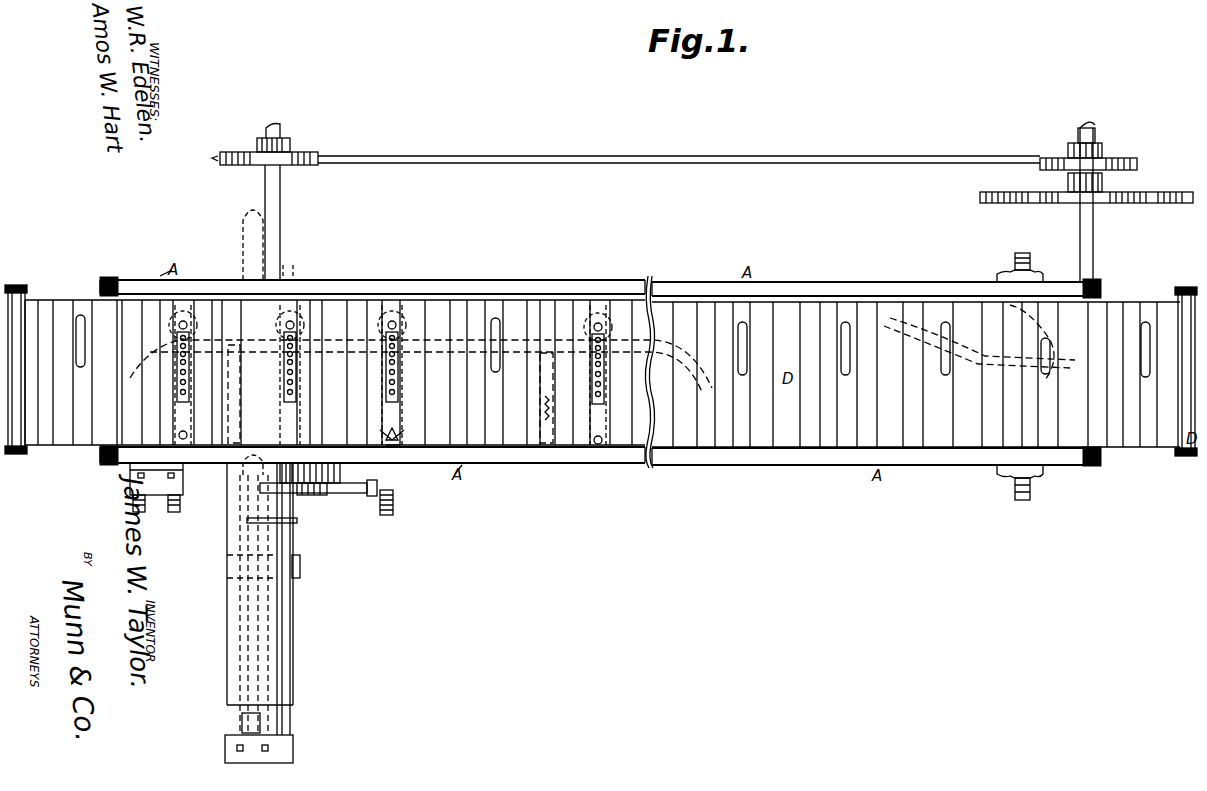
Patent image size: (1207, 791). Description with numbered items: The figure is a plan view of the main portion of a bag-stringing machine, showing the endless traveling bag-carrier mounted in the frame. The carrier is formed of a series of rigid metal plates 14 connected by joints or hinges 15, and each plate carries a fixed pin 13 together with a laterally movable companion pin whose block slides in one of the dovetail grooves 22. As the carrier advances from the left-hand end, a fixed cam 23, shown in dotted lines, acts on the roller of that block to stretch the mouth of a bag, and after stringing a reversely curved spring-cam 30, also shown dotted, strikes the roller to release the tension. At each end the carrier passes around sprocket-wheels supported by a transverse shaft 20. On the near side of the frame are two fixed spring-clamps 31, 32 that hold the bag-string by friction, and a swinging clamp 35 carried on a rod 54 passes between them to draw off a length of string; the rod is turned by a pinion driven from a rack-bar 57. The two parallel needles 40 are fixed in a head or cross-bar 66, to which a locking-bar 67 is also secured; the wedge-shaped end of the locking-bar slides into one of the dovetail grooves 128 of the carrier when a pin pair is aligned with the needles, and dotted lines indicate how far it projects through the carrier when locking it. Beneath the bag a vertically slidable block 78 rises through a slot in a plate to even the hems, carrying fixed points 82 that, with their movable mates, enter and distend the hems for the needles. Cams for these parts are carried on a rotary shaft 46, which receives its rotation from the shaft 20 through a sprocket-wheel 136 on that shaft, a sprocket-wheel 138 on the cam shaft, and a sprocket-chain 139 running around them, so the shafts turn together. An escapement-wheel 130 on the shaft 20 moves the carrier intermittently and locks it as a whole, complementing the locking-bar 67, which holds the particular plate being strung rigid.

The pin 13 is at (385, 453).
The plates or sections 14 is at (597, 373).
The joints or hinges 15 is at (601, 374).
The shaft 20 is at (1056, 305).
The dovetail grooves 22 is at (349, 375).
The fixed cam 23 is at (421, 381).
The spring-cam 30 is at (979, 342).
The spring-clamp 31 is at (153, 496).
The spring-clamp 32 is at (173, 501).
The swinging clamp 35 is at (396, 504).
The needles 40 is at (295, 498).
The shaft 46 is at (282, 222).
The rod 54 is at (312, 501).
The rack-bar 57 is at (320, 478).
The head or cross-bar 66 is at (259, 749).
The locking-bar 67 is at (244, 472).
The vertically slidable block 78 is at (390, 375).
The points 82 is at (391, 431).
The dovetail grooves 128 is at (597, 339).
The escapement-wheel 130 is at (1086, 206).
The sprocket-wheel 136 is at (1088, 155).
The sprocket-wheel 138 is at (269, 145).
The sprocket-chain 139 is at (679, 153).